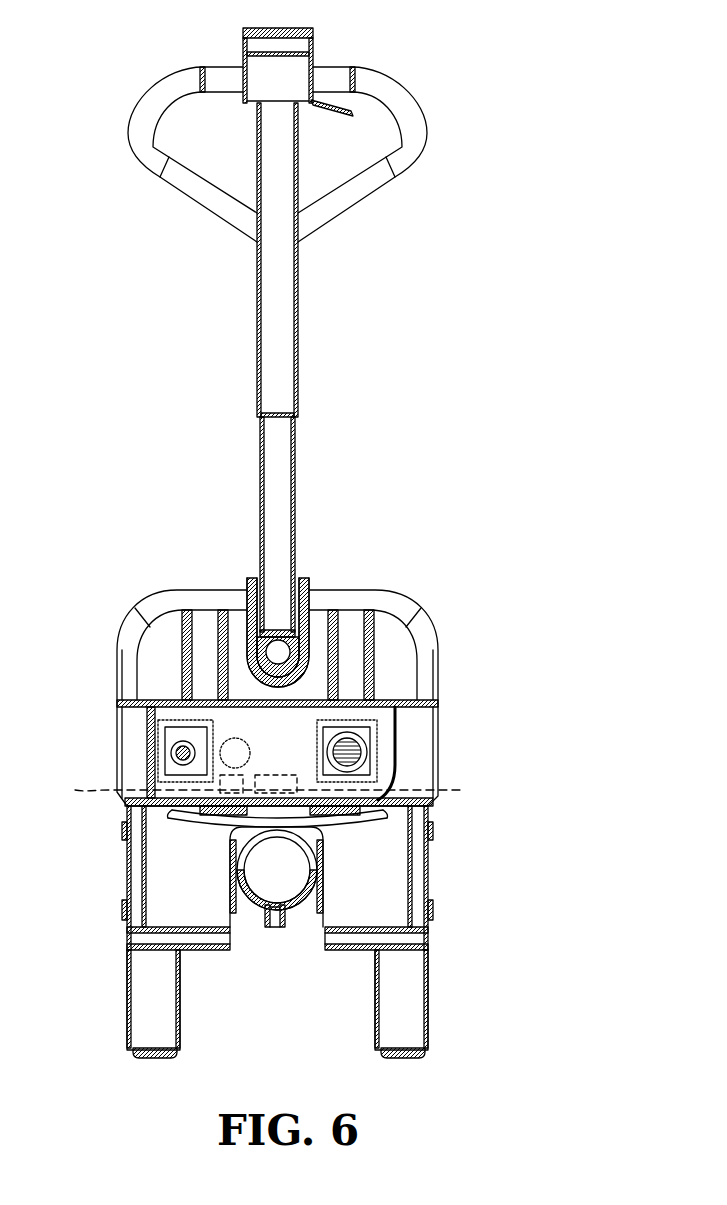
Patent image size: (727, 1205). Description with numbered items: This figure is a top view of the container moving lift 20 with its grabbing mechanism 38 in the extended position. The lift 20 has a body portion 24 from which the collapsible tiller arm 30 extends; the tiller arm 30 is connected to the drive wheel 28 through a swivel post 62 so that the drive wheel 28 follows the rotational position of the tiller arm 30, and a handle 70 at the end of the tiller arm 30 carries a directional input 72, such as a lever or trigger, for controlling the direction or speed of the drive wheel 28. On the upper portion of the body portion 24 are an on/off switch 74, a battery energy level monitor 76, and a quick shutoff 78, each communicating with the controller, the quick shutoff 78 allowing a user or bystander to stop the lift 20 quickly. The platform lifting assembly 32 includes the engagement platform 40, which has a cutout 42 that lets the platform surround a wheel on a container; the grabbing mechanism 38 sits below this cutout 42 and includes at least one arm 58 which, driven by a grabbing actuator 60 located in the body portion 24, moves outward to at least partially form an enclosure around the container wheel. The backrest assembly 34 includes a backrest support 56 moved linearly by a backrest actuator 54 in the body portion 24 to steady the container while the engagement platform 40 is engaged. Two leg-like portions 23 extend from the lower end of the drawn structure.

The lift 20 is at (452, 497).
The legs 23 is at (150, 962).
The body portion 24 is at (284, 664).
The drive wheel 28 is at (280, 602).
The tiller arm 30 is at (293, 325).
The platform lifting assembly 32 is at (274, 919).
The backrest assembly 34 is at (342, 838).
The grabbing mechanism 38 is at (276, 947).
The engagement platform 40 is at (376, 852).
The cutout 42 is at (290, 947).
The backrest actuator 54 is at (432, 792).
The backrest support 56 is at (221, 828).
The arm 58 is at (312, 892).
The grabbing actuator 60 is at (110, 790).
The swivel post 62 is at (274, 648).
The handle 70 is at (410, 97).
The directional input 72 is at (330, 113).
The on/off switch 74 is at (173, 745).
The battery energy level monitor 76 is at (356, 748).
The quick shutoff 78 is at (233, 750).